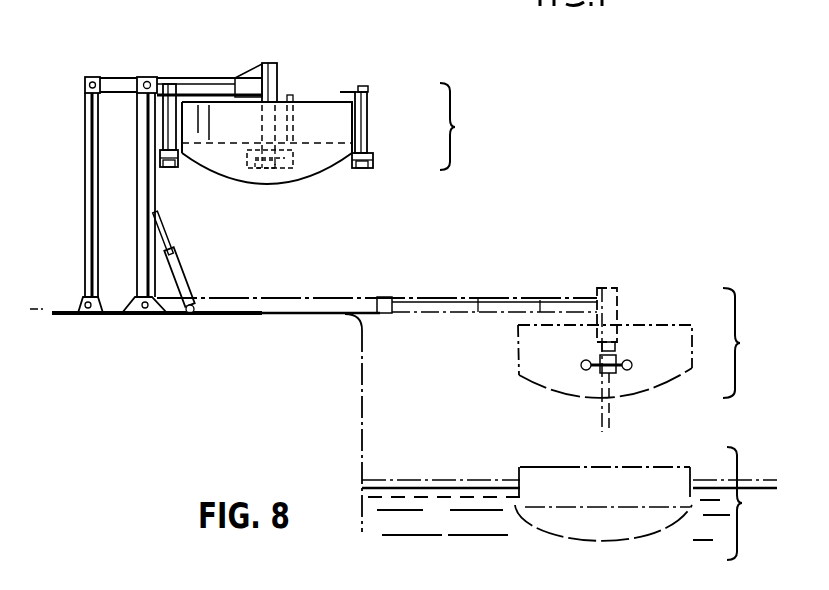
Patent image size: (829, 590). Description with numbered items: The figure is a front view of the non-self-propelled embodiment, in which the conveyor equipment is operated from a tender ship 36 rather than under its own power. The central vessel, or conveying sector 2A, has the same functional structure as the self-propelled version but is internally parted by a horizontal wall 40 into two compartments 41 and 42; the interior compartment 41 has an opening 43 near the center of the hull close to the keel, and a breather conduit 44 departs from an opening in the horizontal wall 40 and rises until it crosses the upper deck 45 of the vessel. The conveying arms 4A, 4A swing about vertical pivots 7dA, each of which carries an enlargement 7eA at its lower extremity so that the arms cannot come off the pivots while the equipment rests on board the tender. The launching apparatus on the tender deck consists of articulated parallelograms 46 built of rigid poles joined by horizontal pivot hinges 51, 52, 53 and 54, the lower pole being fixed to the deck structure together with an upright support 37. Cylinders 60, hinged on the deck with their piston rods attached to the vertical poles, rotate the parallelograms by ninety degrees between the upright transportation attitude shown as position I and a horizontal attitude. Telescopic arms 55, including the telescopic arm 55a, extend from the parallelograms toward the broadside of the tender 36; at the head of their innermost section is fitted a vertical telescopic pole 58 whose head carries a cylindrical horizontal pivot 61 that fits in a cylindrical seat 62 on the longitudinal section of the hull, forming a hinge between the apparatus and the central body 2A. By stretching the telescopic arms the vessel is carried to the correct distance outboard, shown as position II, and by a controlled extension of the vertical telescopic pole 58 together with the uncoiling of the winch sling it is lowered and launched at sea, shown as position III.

The conveying sector 2A is at (345, 87).
The conveying arms 4A is at (181, 168).
The vertical pivots 7dA is at (170, 125).
The enlargement 7eA is at (165, 163).
The tender ship 36 is at (340, 397).
The column 37 is at (80, 248).
The horizontal wall 40 is at (313, 140).
The interior compartment 41 is at (222, 175).
The compartment 42 is at (222, 118).
The opening 43 is at (265, 183).
The breather conduit 44 is at (290, 98).
The upper deck 45 is at (307, 140).
The articulated parallelograms 46 is at (80, 210).
The horizontal pivot hinge 51 is at (147, 77).
The horizontal pivot hinge 52 is at (85, 78).
The horizontal pivot hinge 53 is at (85, 303).
The horizontal pivot hinge 54 is at (137, 302).
The telescopic arms 55 is at (110, 78).
The telescopic arm 55a is at (303, 296).
The vertical telescopic pole 58 is at (262, 63).
The cylinders 60 is at (183, 262).
The cylindrical horizontal pivots 61 is at (293, 182).
The cylindrical seats 62 is at (248, 176).
The position I is at (454, 126).
The position II is at (746, 343).
The position III is at (754, 503).